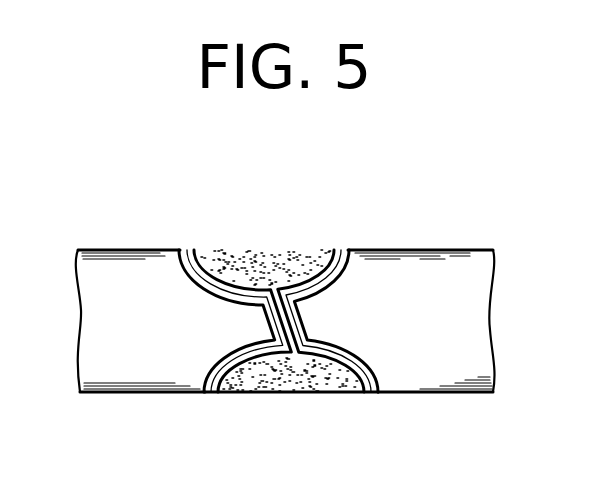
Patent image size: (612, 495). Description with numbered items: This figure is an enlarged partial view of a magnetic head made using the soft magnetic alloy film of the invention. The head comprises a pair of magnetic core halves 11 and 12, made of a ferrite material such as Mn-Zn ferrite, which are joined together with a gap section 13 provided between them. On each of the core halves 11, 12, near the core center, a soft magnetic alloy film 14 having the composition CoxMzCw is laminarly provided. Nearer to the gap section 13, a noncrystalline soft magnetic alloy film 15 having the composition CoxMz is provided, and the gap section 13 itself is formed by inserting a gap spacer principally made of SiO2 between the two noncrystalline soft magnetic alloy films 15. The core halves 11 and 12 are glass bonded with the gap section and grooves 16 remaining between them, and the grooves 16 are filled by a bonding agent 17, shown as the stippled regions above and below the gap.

The magnetic core half 11 is at (98, 270).
The magnetic core half 12 is at (440, 270).
The gap section 13 is at (290, 322).
The soft magnetic alloy film 14 is at (183, 250).
The noncrystalline soft magnetic alloy film 15 is at (192, 250).
The grooves 16 is at (243, 394).
The bonding agent 17 is at (263, 267).